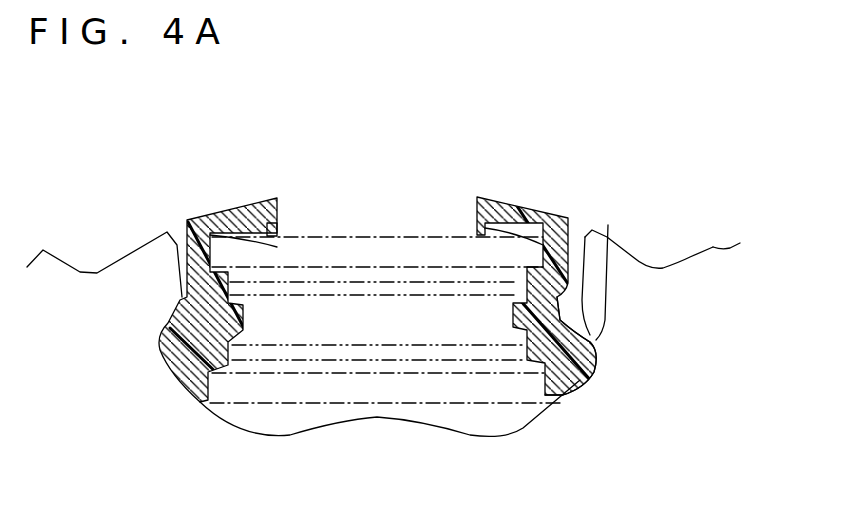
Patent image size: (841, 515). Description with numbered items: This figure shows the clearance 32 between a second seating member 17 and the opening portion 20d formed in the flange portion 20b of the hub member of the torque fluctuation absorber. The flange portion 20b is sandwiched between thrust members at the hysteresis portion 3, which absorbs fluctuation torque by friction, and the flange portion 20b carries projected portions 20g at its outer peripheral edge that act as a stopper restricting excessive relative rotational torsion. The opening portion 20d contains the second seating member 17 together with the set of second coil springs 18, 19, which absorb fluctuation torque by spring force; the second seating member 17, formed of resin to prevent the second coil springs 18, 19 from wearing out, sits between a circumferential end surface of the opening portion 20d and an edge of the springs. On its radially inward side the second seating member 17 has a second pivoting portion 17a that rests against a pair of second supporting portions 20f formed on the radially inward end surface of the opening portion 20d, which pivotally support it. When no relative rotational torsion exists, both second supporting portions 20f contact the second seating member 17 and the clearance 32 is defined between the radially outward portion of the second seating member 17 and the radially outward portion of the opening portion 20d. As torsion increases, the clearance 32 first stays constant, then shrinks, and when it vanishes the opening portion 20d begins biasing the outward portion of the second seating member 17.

The hysteresis portion 3 is at (702, 92).
The second seating member 17 is at (510, 199).
The second pivoting portion 17a is at (587, 350).
The second coil spring 18 is at (430, 237).
The second coil spring 19 is at (348, 280).
The clearance 32 is at (180, 243).
The second supporting portion 20f is at (608, 225).
The flange portion 20b is at (625, 270).
The projected portion 20g is at (715, 262).
The opening portion 20d is at (378, 418).